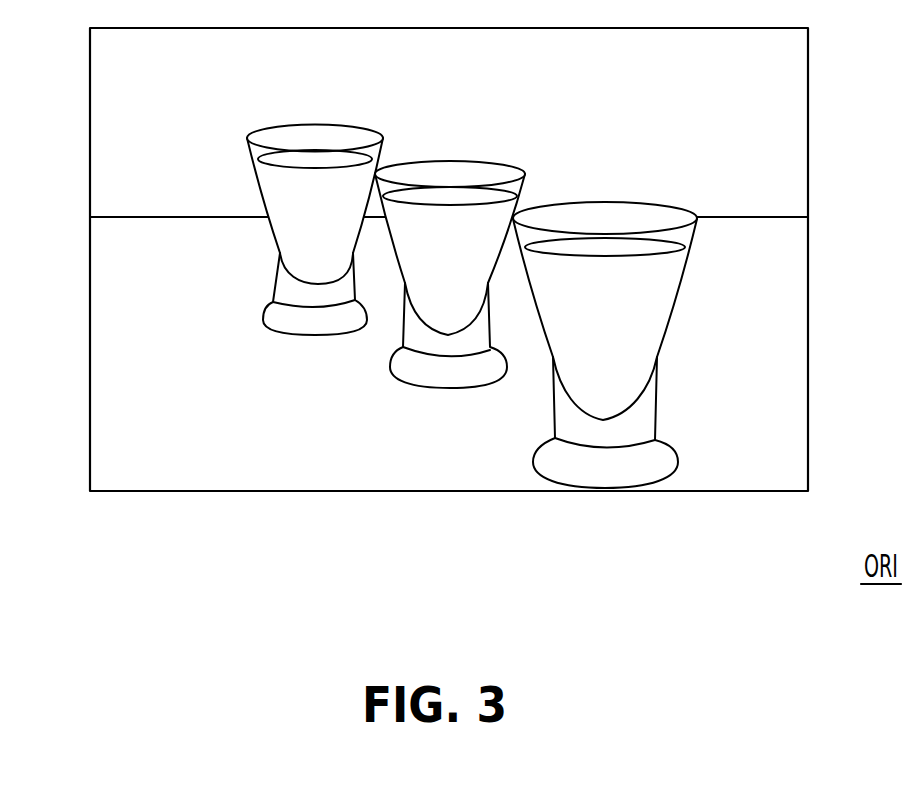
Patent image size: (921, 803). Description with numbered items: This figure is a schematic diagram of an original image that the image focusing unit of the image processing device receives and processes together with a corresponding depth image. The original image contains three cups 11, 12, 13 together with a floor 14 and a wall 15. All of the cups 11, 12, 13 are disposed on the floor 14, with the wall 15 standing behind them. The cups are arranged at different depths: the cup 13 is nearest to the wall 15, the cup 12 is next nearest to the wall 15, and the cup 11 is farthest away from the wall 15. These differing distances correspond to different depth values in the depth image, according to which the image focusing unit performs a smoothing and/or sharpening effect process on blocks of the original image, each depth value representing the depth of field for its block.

The cup 11 is at (610, 465).
The cup 12 is at (453, 370).
The cup 13 is at (315, 318).
The floor 14 is at (748, 382).
The wall 15 is at (745, 108).